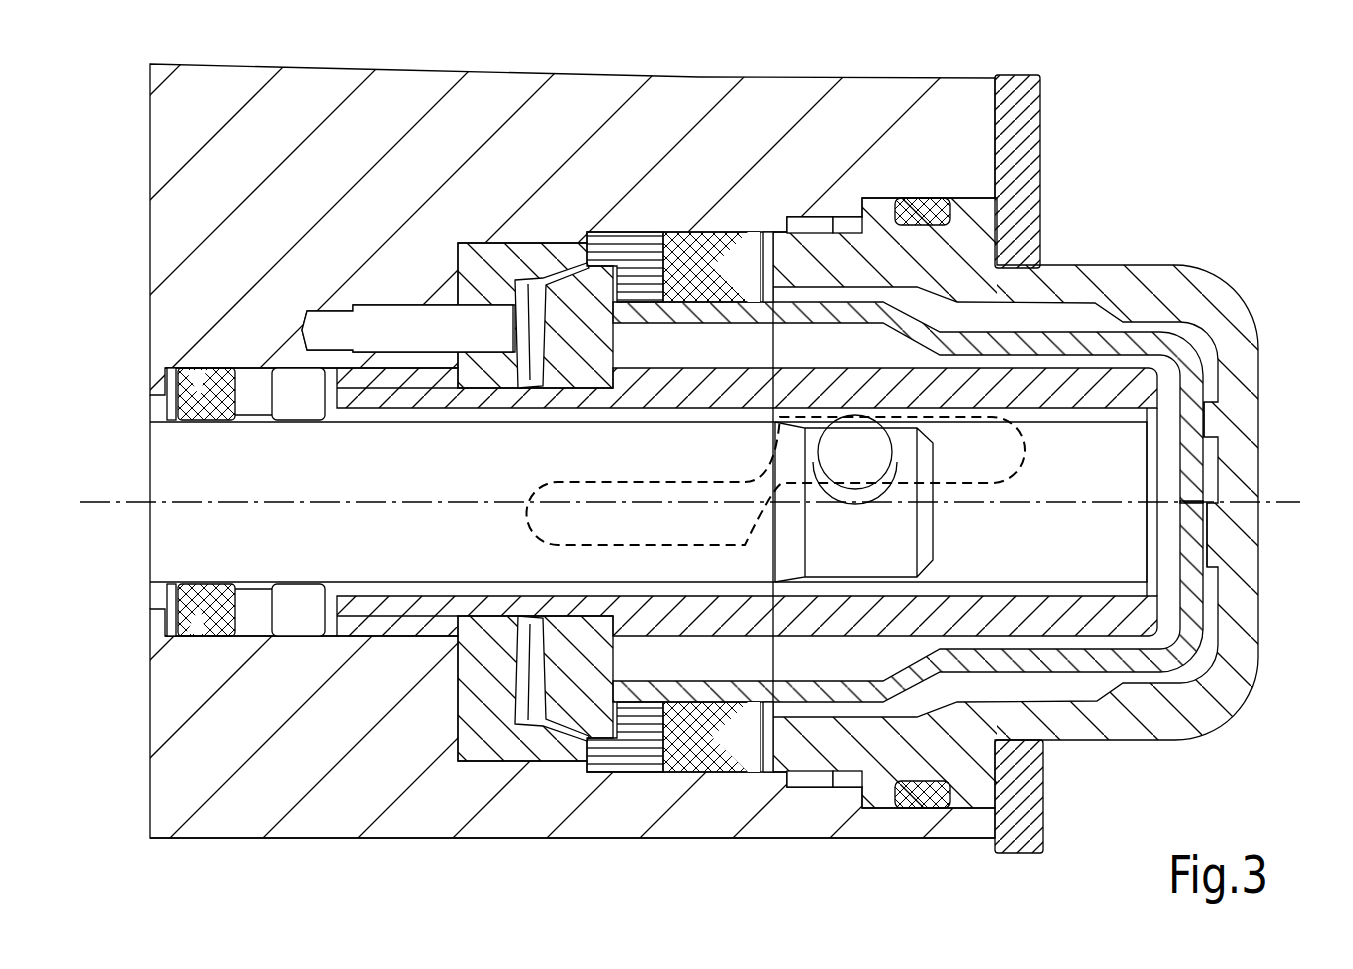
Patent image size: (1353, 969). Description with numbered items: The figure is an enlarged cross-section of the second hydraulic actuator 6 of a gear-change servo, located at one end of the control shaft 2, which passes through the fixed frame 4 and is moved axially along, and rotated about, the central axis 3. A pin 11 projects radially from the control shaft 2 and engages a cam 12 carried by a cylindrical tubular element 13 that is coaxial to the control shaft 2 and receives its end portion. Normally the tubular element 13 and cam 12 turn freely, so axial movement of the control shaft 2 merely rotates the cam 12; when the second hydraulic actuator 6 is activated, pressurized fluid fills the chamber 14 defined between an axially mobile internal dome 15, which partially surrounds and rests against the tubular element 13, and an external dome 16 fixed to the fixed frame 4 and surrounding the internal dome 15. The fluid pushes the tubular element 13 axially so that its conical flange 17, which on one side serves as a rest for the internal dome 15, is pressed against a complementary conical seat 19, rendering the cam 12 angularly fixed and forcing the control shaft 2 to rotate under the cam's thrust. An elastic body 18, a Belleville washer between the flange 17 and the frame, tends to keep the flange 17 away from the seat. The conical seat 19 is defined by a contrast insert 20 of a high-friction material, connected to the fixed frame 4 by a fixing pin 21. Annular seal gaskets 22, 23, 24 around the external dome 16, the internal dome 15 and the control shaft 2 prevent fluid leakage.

The control shaft 2 is at (165, 447).
The central axis 3 is at (1290, 487).
The fixed frame 4 is at (290, 836).
The second hydraulic actuator 6 is at (727, 851).
The pin 11 is at (866, 456).
The cam 12 is at (1024, 451).
The cylindrical tubular element 13 is at (1133, 378).
The chamber 14 is at (1210, 537).
The internal dome 15 is at (1080, 673).
The external dome 16 is at (1210, 713).
The flange 17 is at (580, 718).
The elastic body 18 is at (527, 763).
The conical seat 19 is at (557, 288).
The contrast insert 20 is at (512, 253).
The fixing pin 21 is at (433, 327).
The annular seal gasket 22 is at (923, 802).
The annular seal gasket 23 is at (733, 775).
The annular seal gasket 24 is at (206, 632).